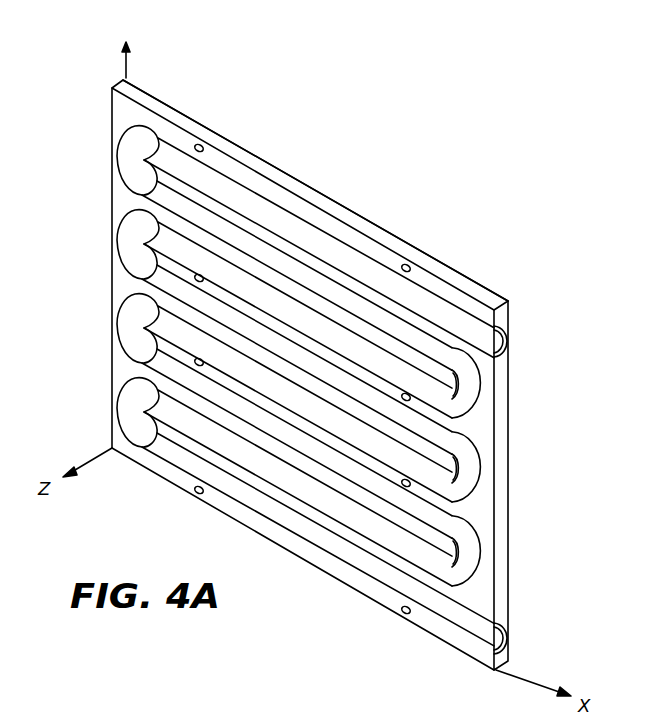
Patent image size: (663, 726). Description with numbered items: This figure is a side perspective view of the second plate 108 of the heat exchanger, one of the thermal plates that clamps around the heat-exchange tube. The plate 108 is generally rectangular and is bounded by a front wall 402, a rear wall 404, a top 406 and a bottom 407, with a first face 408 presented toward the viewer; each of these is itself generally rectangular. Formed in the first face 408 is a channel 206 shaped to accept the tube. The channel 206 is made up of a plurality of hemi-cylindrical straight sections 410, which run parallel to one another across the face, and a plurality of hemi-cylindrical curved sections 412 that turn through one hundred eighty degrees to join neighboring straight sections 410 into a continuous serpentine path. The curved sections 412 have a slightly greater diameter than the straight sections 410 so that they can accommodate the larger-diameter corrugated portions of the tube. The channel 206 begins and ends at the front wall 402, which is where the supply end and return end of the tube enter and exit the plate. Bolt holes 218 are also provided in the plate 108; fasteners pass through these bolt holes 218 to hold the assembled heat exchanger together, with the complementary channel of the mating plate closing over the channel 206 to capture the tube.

The second plate 108 is at (158, 102).
The bolt holes 218 is at (203, 143).
The rear wall 404 is at (110, 192).
The top 406 is at (330, 203).
The channel 206 is at (423, 300).
The front wall 402 is at (504, 387).
The curved sections 412 is at (130, 392).
The straight sections 410 is at (427, 560).
The bottom 407 is at (313, 568).
The first face 408 is at (150, 458).